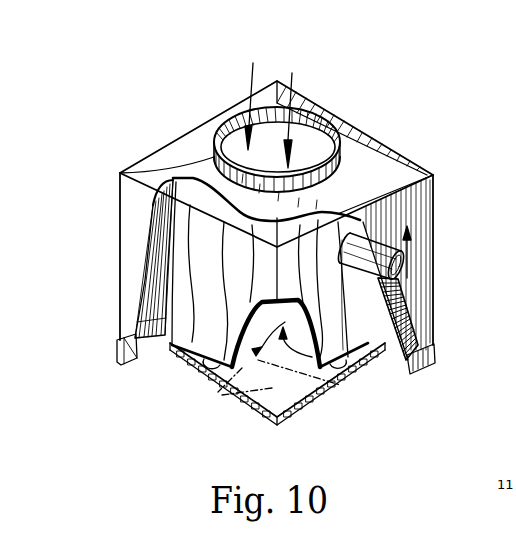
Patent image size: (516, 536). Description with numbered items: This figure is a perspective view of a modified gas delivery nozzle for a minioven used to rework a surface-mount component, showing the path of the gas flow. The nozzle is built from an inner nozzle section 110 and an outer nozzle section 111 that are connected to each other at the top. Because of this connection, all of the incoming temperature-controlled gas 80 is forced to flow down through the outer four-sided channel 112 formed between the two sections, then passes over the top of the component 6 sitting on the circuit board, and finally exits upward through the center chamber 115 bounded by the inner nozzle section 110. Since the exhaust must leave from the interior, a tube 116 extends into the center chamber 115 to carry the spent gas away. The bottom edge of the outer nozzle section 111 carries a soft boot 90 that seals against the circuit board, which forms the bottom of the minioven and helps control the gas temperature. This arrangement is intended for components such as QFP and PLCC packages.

The component body 6 is at (290, 390).
The temperature-controlled gas 80 is at (248, 92).
The boot 90 is at (418, 373).
The inner nozzle section 110 is at (271, 280).
The outer nozzle section 111 is at (135, 272).
The outer 4-sided channel 112 is at (140, 316).
The center chamber 115 is at (262, 347).
The tube 116 is at (408, 216).